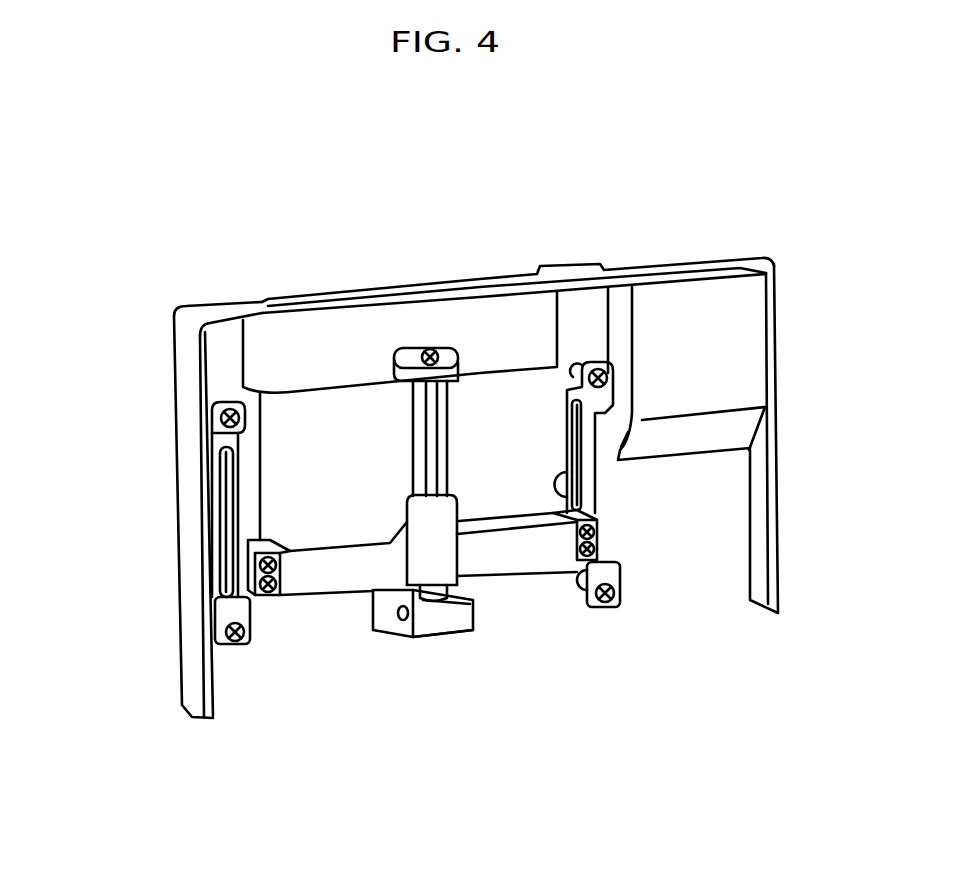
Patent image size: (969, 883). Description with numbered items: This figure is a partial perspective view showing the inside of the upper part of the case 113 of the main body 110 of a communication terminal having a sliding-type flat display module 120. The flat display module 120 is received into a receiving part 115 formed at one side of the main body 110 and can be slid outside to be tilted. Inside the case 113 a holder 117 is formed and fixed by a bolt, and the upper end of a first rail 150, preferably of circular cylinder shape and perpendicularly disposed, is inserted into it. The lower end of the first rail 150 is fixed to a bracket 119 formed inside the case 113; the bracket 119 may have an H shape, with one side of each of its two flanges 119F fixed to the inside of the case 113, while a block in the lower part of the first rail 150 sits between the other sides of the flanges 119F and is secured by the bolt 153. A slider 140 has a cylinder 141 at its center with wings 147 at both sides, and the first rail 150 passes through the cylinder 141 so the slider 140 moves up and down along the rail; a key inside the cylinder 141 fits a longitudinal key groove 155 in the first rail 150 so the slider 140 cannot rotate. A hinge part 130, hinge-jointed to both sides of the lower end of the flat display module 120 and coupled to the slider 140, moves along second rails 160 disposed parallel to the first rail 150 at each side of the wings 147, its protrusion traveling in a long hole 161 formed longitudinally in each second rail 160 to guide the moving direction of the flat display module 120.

The main body 110 is at (193, 303).
The case 113 is at (227, 363).
The receiving part 115 is at (443, 622).
The holder 117 is at (431, 352).
The bracket 119 is at (377, 612).
The flanges 119F is at (427, 640).
The flat display module 120 is at (459, 276).
The hinge part 130 is at (248, 535).
The slider 140 is at (472, 560).
The cylinder 141 is at (482, 579).
The wings 147 is at (300, 572).
The first rail 150 is at (800, 486).
The bolt 153 is at (403, 617).
The key groove 155 is at (584, 437).
The second rails 160 is at (227, 625).
The long hole 161 is at (92, 468).